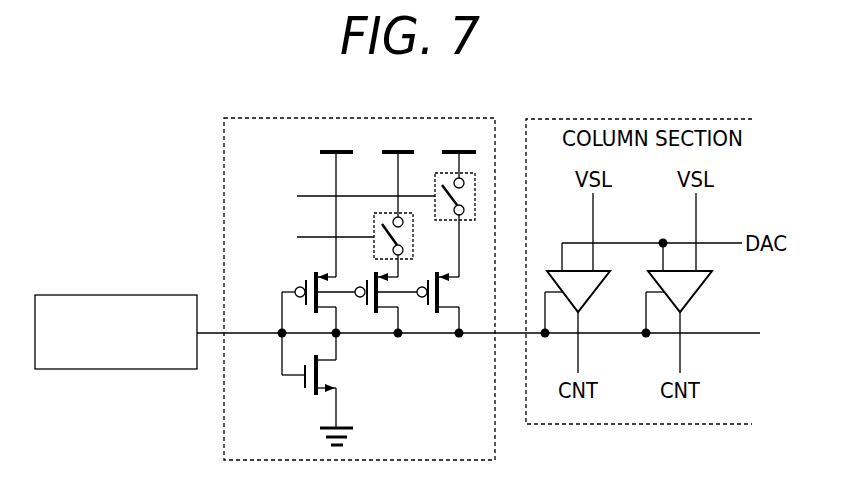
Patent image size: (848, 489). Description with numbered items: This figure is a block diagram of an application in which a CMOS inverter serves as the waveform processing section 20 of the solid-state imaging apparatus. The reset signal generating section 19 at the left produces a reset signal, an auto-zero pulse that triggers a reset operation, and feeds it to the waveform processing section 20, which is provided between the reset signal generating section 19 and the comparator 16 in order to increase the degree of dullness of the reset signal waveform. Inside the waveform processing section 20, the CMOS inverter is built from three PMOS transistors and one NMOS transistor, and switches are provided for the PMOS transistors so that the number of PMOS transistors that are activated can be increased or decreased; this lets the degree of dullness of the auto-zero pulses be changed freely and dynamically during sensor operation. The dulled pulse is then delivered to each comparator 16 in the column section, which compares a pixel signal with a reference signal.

The reset signal generating section 19 is at (80, 295).
The waveform processing section 20 is at (297, 118).
The comparator 16 is at (598, 295).